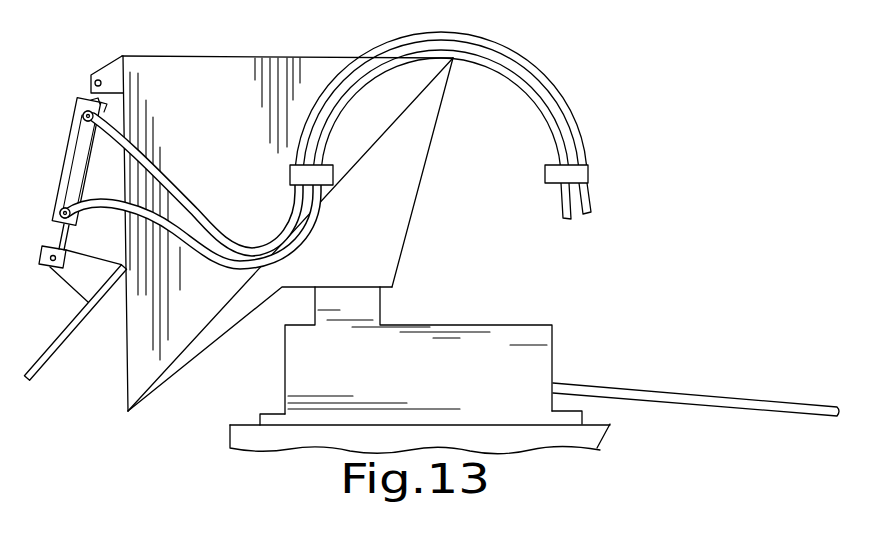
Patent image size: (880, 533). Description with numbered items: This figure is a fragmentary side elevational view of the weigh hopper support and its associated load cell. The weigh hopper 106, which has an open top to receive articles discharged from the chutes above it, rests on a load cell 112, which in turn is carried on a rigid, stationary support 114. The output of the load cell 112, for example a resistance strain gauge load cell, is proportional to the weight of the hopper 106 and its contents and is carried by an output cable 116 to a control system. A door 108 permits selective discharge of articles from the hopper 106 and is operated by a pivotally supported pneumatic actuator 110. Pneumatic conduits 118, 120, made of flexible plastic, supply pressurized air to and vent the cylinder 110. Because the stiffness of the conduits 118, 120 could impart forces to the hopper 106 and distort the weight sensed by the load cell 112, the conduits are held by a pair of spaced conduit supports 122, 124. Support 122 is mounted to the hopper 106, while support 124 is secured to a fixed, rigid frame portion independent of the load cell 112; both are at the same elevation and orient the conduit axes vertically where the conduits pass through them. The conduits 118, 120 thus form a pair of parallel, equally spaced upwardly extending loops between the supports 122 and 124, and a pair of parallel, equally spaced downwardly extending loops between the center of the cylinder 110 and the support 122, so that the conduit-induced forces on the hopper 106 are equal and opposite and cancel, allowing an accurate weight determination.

The weigh hopper 106 is at (213, 68).
The door 108 is at (70, 321).
The pneumatic actuator 110 is at (78, 148).
The load cell 112 is at (487, 330).
The stationary support 114 is at (593, 434).
The output cable 116 is at (670, 393).
The pneumatic conduit 118 is at (525, 58).
The pneumatic conduit 120 is at (517, 88).
The conduit support 122 is at (297, 173).
The conduit support 124 is at (585, 170).